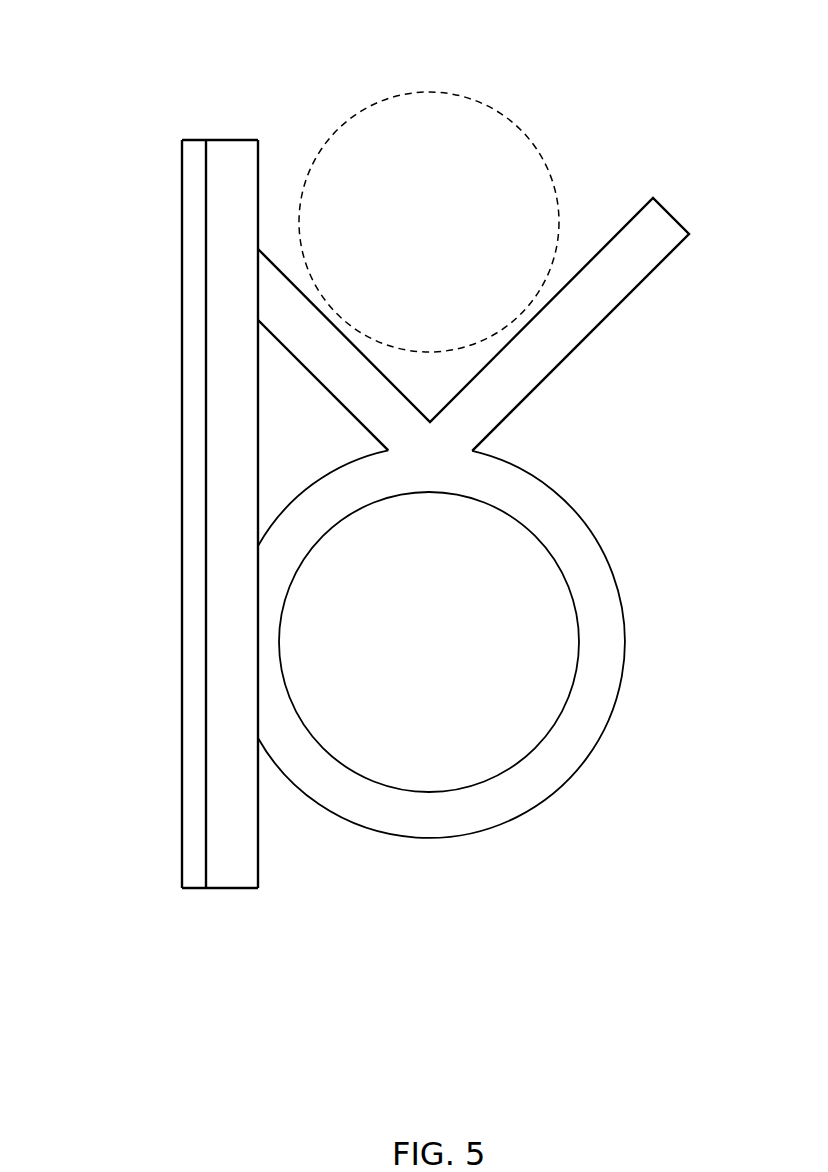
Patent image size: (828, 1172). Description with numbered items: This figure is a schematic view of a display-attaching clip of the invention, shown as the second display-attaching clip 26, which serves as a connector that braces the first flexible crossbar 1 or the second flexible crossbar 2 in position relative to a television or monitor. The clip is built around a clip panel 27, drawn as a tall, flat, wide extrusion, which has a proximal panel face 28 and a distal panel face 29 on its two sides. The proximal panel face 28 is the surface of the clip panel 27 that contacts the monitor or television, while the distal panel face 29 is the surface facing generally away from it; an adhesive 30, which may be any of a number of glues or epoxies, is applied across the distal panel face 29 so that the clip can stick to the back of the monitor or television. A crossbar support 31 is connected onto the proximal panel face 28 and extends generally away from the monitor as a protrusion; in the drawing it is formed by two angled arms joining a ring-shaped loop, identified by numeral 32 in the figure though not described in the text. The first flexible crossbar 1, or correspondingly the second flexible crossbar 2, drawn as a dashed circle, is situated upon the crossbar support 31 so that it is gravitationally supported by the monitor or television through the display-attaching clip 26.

The first flexible crossbar 1 is at (507, 117).
The second flexible crossbar 2 is at (429, 222).
The second display-attaching clip 26 is at (205, 83).
The clip panel 27 is at (379, 567).
The proximal panel face 28 is at (235, 873).
The distal panel face 29 is at (207, 814).
The adhesive 30 is at (258, 816).
The crossbar support 31 is at (193, 515).
The loop / ring member with arms 32 is at (582, 740).